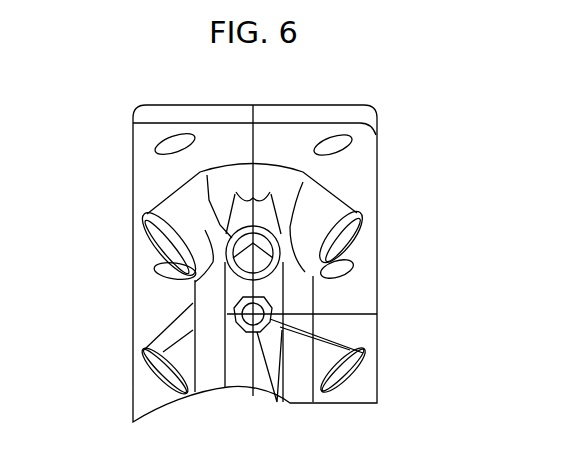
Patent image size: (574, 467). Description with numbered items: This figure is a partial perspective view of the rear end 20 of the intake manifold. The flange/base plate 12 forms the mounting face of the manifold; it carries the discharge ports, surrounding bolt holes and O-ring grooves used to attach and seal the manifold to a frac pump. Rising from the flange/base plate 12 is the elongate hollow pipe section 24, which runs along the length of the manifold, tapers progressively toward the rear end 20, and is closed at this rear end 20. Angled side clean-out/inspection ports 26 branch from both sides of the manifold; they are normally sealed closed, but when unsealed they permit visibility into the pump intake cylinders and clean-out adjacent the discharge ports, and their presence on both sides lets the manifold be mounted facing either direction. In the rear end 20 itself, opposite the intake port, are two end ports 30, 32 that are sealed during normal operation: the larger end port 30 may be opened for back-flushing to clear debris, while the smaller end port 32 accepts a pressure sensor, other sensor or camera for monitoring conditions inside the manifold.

The flange/base plate 12 is at (292, 286).
The rear end 20 is at (220, 178).
The elongate hollow pipe section 24 is at (210, 372).
The side clean-out/inspection ports 26 is at (354, 239).
The end port 30 is at (258, 238).
The end port 32 is at (302, 367).